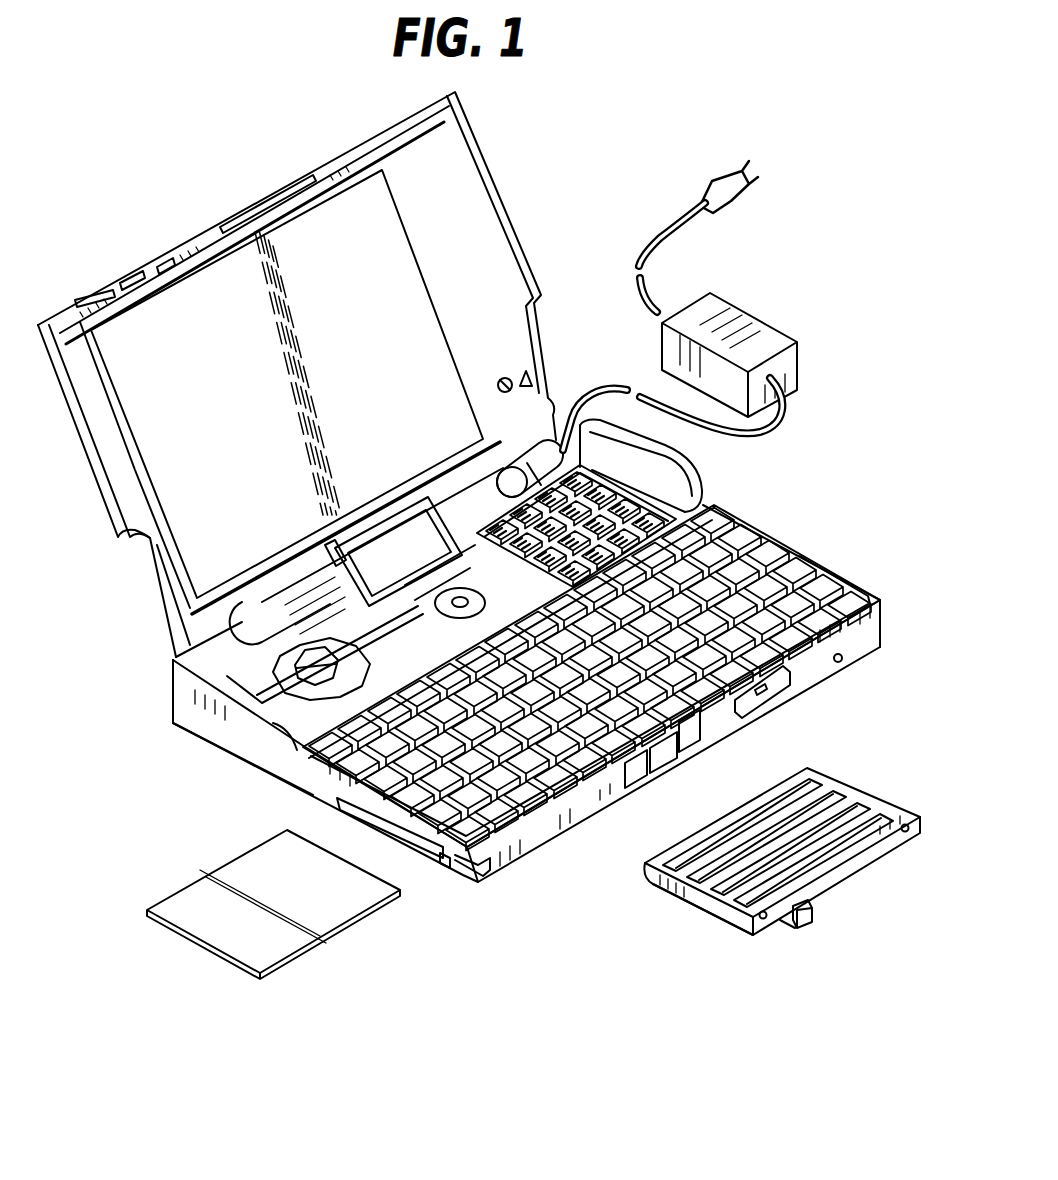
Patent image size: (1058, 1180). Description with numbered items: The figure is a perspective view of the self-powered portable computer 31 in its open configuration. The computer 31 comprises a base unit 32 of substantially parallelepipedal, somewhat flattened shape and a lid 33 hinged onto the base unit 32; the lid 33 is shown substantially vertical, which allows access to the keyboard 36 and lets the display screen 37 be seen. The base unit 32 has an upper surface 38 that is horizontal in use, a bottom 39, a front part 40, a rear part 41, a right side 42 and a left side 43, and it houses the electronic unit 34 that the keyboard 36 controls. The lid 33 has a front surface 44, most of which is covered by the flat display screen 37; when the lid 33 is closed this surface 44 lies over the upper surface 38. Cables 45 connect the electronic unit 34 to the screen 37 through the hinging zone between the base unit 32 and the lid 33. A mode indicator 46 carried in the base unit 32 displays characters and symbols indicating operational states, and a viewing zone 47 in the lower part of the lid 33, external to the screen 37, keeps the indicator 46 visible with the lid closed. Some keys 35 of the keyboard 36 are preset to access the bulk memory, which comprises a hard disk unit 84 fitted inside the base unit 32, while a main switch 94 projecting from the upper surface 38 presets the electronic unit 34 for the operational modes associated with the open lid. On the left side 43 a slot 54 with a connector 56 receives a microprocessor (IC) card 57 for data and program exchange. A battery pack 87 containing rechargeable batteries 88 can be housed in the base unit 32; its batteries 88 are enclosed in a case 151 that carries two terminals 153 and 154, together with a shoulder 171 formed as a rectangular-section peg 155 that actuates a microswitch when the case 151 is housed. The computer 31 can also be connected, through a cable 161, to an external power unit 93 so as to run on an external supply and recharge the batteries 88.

The self-powered portable computer 31 is at (620, 230).
The base unit 32 is at (215, 821).
The lid 33 is at (515, 160).
The electronic unit 34 is at (772, 690).
The keys 35 is at (750, 555).
The keyboard 36 is at (795, 530).
The display screen 37 is at (225, 282).
The upper surface 38 is at (848, 598).
The bottom 39 is at (585, 815).
The front part 40 is at (528, 847).
The rear part 41 is at (165, 700).
The right side 42 is at (880, 627).
The left side 43 is at (233, 748).
The front surface 44 is at (472, 252).
The cables 45 is at (530, 463).
The mode indicator 46 is at (396, 547).
The viewing zone 47 is at (340, 547).
The slot 54 is at (313, 797).
The connector 56 is at (440, 862).
The microprocessor (IC) card 57 is at (322, 918).
The hard disk unit 84 is at (307, 657).
The battery pack 87 is at (848, 771).
The batteries 88 is at (760, 800).
The external power unit 93 is at (748, 323).
The main switch 94 is at (442, 607).
The case 151 is at (672, 890).
The terminal 153 is at (905, 832).
The terminal 154 is at (763, 921).
The peg 155 is at (786, 927).
The cable 161 is at (642, 394).
The shoulder 171 is at (810, 917).